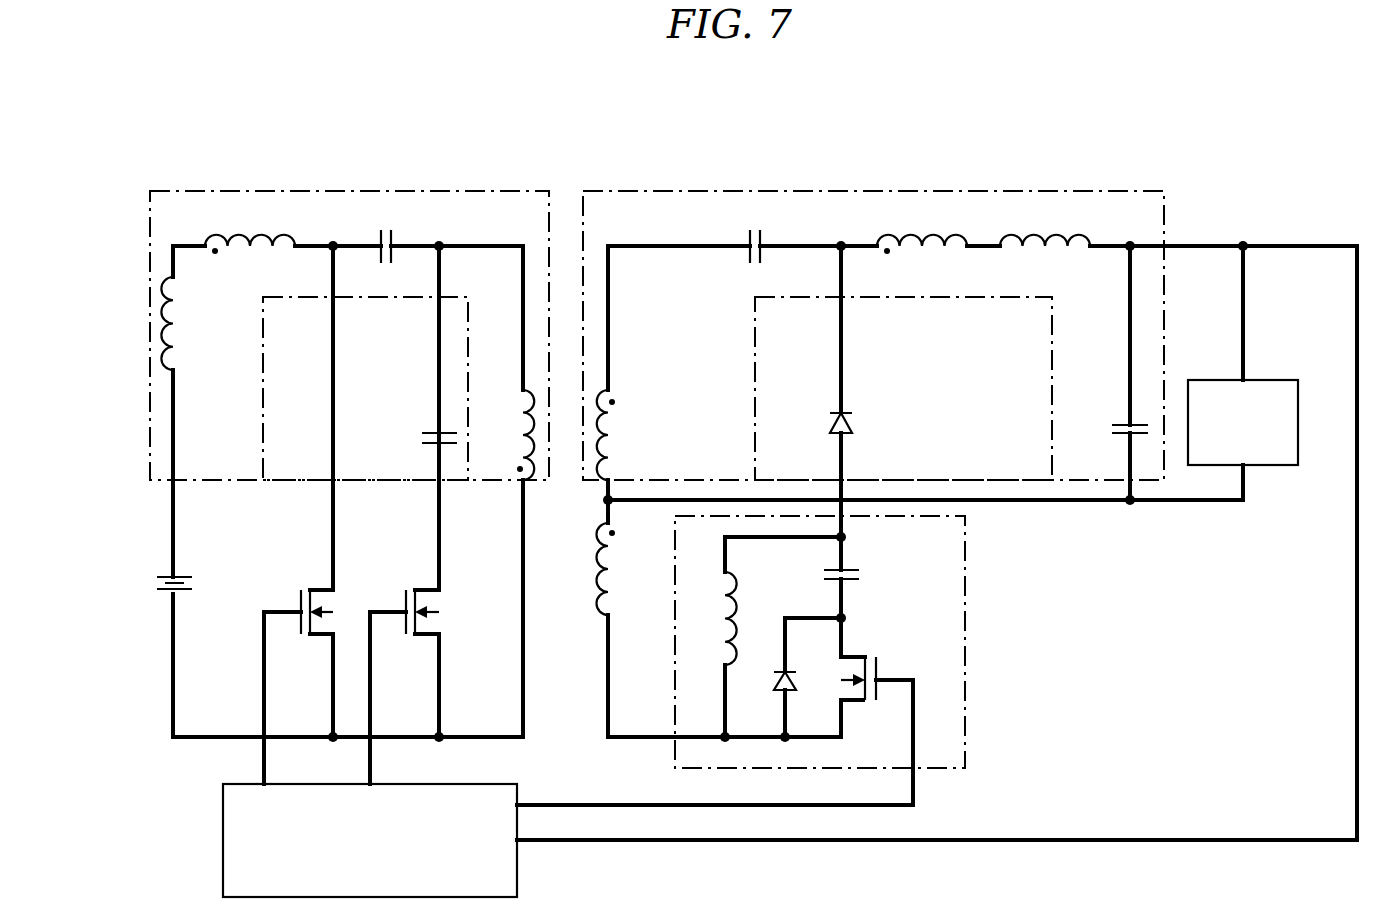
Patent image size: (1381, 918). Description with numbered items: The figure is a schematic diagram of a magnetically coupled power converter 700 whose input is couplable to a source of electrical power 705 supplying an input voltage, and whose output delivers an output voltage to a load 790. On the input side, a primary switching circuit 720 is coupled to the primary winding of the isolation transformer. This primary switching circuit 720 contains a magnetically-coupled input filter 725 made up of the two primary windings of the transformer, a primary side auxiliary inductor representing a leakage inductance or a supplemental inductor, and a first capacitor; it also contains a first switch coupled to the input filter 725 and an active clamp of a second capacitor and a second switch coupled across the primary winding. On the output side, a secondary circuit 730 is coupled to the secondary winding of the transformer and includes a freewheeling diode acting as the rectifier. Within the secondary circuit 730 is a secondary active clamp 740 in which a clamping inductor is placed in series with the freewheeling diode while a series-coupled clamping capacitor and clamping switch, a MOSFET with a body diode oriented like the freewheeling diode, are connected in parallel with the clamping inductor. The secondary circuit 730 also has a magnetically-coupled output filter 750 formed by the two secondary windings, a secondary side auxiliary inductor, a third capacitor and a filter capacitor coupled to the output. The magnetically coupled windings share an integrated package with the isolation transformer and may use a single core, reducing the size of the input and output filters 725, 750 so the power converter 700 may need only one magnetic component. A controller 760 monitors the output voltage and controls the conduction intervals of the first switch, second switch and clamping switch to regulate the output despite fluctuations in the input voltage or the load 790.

The power converter 700 is at (568, 127).
The source of electrical power 705 is at (154, 583).
The primary switching circuit 720 is at (552, 168).
The magnetically-coupled input filter 725 is at (346, 443).
The secondary circuit 730 is at (1172, 168).
The secondary active clamp 740 is at (741, 660).
The magnetically-coupled output filter 750 is at (951, 373).
The controller 760 is at (370, 840).
The load 790 is at (1243, 355).